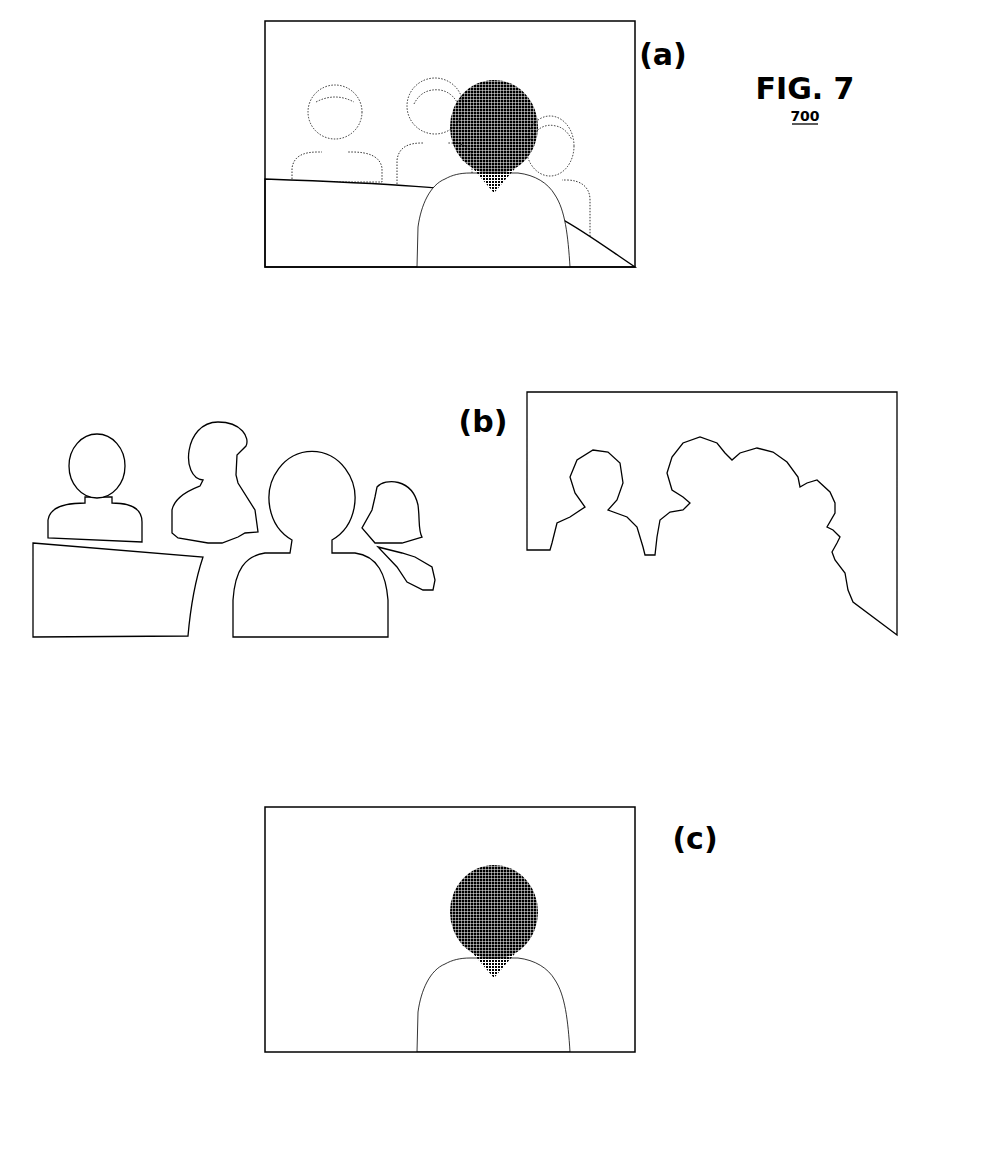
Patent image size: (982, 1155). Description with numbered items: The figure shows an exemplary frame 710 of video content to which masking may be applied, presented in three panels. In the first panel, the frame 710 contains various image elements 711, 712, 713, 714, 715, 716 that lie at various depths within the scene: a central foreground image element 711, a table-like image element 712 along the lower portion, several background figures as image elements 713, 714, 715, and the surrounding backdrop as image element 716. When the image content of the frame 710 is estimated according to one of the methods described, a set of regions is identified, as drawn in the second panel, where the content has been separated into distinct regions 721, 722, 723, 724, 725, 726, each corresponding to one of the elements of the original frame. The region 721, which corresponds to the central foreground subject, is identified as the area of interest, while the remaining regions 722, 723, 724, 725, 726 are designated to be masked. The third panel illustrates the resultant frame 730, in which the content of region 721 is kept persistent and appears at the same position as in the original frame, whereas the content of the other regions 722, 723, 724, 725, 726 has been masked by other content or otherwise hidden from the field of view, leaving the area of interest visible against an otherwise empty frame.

The frame 710 is at (637, 254).
The image element 711 is at (493, 154).
The image element 712 is at (448, 193).
The image element 713 is at (337, 104).
The image element 714 is at (434, 107).
The image element 715 is at (555, 148).
The image element 716 is at (599, 50).
The region 721 is at (297, 626).
The region 722 is at (105, 626).
The region 723 is at (82, 533).
The region 724 is at (205, 448).
The region 725 is at (382, 543).
The region 726 is at (859, 418).
The resultant frame 730 is at (637, 962).